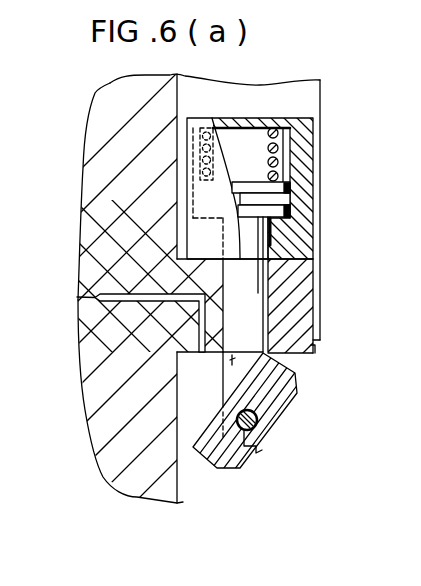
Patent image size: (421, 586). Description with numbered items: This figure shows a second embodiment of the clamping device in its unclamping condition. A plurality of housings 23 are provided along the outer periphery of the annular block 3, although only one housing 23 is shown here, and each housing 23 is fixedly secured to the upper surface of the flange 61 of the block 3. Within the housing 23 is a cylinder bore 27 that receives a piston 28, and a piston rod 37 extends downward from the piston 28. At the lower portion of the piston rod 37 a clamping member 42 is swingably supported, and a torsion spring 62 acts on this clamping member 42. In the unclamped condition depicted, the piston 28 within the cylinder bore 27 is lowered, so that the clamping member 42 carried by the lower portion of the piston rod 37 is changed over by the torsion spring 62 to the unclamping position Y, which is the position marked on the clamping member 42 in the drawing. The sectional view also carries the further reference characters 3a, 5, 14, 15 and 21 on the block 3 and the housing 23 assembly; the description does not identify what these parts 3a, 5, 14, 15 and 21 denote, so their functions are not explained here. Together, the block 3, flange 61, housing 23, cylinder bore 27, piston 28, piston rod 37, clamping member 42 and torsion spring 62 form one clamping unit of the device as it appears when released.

The annular block 3 is at (100, 143).
The body corner portion 3a is at (300, 355).
The lower body portion 5 is at (95, 402).
The oil passage slot 14 is at (198, 313).
The cross-hatched body portion 15 is at (97, 337).
The valve assembly 21 is at (336, 187).
The housing 23 is at (304, 130).
The cylinder bore 27 is at (292, 162).
The piston 28 is at (298, 190).
The piston rod 37 is at (272, 292).
The clamping member 42 is at (296, 401).
The flange 61 is at (308, 322).
The torsion spring 62 is at (259, 454).